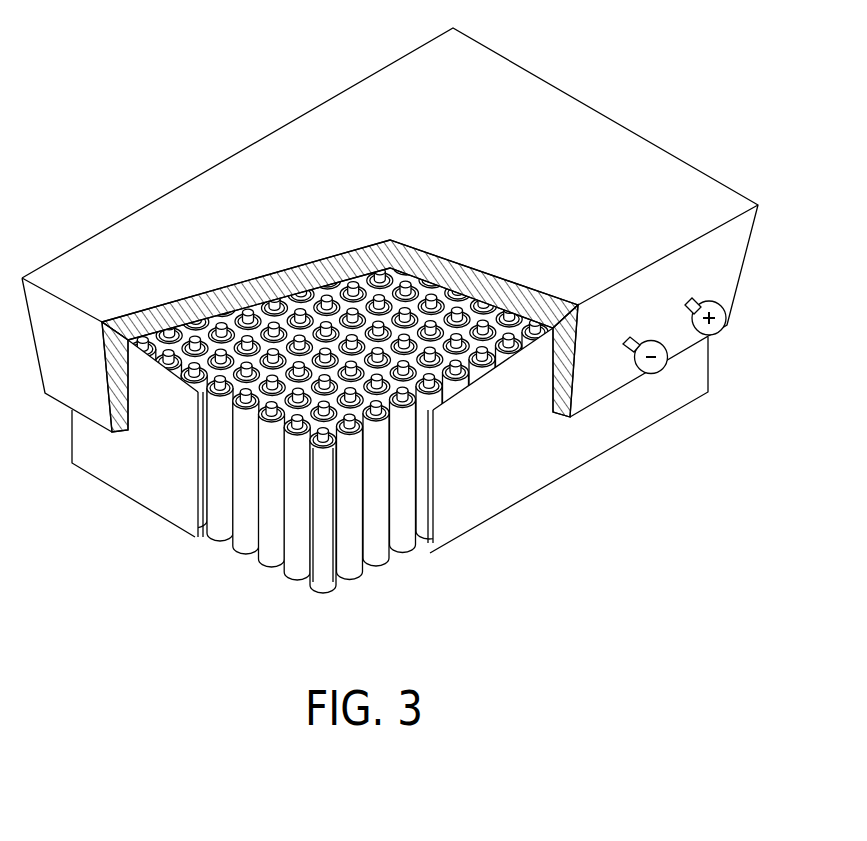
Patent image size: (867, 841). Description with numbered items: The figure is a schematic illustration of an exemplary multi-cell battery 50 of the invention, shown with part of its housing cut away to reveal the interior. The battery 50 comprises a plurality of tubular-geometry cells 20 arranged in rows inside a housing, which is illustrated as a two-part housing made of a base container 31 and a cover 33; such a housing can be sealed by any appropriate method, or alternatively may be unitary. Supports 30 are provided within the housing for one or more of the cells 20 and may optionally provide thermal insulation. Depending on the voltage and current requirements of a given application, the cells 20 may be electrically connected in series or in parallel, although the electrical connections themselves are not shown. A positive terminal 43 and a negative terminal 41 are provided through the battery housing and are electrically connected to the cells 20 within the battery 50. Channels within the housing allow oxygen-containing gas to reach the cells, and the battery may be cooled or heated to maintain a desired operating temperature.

The battery 50 is at (123, 97).
The cover 33 is at (113, 255).
The base container 31 is at (125, 455).
The supports 30 is at (315, 585).
The cells 20 is at (340, 444).
The negative terminal 41 is at (647, 368).
The positive terminal 43 is at (715, 327).